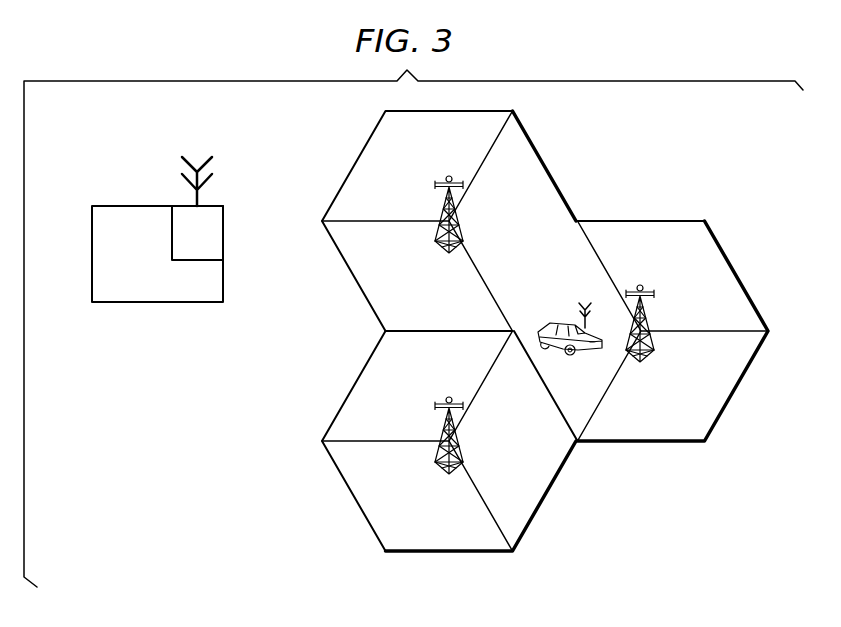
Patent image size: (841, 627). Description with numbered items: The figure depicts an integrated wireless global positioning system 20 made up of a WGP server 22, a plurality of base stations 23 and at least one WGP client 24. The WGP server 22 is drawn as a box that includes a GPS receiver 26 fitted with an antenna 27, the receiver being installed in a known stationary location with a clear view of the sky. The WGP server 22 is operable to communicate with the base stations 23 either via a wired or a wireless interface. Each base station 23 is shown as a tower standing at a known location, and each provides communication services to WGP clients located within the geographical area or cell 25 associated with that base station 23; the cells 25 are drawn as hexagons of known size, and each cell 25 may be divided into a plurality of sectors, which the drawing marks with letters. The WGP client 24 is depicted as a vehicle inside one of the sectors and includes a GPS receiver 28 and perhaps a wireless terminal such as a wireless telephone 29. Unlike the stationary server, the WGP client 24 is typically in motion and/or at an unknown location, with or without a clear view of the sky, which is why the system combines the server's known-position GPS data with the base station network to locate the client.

The integrated wireless global positioning system 20 is at (205, 372).
The WGP server 22 is at (92, 247).
The base station 23 is at (640, 284).
The WGP client 24 is at (575, 417).
The cell 25 is at (728, 262).
The GPS receiver 26 is at (223, 224).
The antenna 27 is at (212, 164).
The GPS receiver 28 is at (559, 322).
The wireless telephone 29 is at (592, 312).